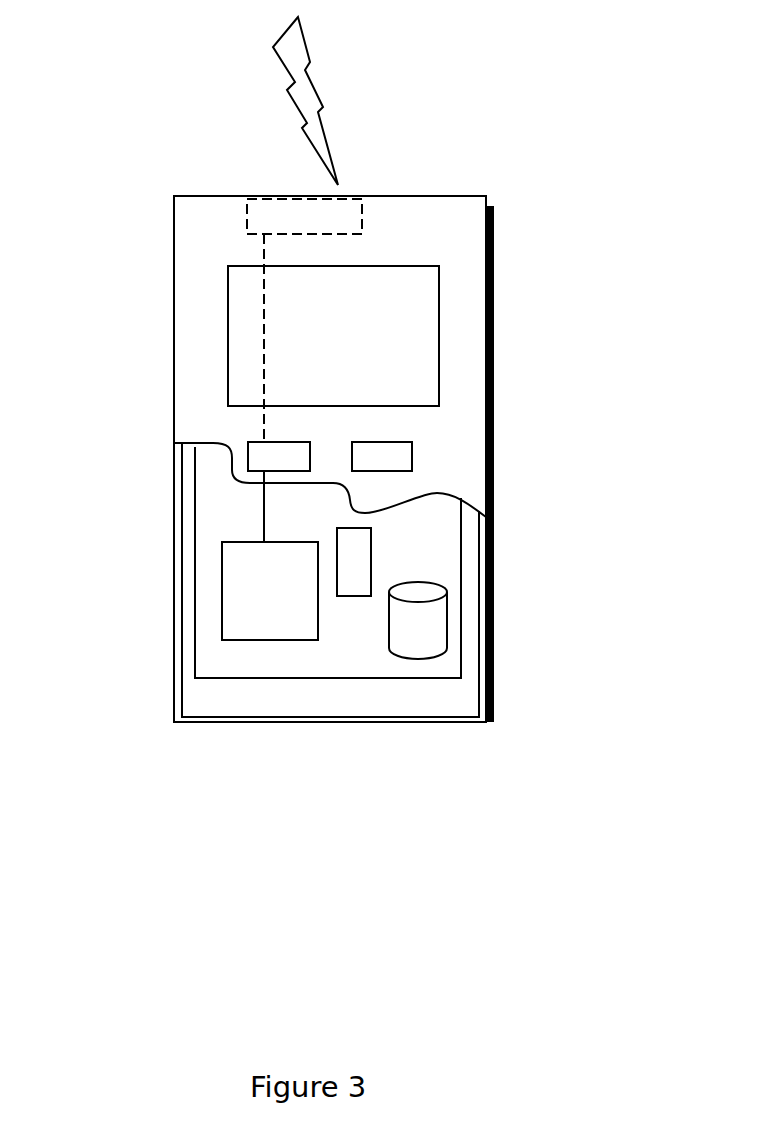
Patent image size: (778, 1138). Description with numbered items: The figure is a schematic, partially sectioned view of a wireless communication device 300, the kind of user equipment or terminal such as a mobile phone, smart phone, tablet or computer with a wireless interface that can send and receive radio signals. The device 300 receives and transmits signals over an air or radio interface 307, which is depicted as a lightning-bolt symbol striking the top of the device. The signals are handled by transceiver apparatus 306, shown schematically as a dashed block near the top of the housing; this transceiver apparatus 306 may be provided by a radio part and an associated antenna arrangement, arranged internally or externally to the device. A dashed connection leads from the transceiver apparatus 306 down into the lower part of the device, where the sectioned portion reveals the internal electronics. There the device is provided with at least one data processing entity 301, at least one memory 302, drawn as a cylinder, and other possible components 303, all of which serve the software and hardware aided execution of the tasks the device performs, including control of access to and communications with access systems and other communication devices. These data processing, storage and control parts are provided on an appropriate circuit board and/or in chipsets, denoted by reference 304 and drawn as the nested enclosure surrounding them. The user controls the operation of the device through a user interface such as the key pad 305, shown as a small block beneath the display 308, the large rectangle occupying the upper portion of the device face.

The communication device 300 is at (177, 239).
The data processing entity 301 is at (228, 573).
The memory 302 is at (412, 632).
The other possible components 303 is at (353, 547).
The circuit board and/or chipsets 304 is at (222, 660).
The key pad 305 is at (253, 455).
The transceiver apparatus 306 is at (352, 212).
The air or radio interface 307 is at (346, 116).
The display 308 is at (247, 322).